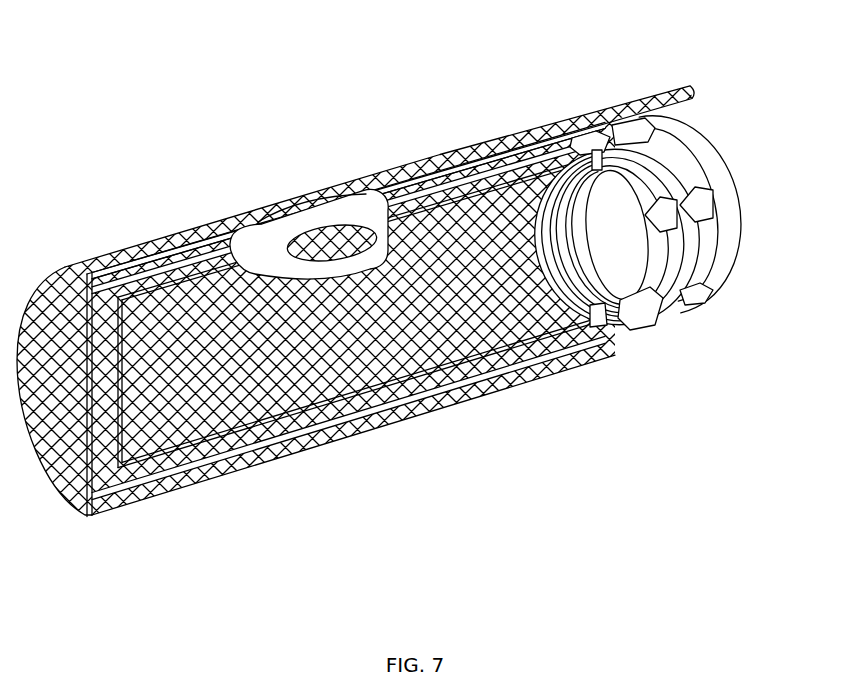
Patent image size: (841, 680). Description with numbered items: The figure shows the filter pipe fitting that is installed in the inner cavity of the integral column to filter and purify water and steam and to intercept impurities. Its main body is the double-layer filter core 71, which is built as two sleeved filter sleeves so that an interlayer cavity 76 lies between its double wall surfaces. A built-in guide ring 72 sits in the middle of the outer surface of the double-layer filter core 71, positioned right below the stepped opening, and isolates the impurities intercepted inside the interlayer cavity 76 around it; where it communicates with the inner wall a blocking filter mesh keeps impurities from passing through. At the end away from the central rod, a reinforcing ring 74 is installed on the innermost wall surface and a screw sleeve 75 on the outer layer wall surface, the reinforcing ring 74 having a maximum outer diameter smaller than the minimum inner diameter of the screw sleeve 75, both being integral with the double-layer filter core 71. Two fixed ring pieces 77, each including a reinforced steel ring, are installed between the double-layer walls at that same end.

The double-layer filter core 71 is at (92, 517).
The built-in guide ring 72 is at (262, 243).
The reinforcing ring 74 is at (612, 342).
The screw sleeve 75 is at (737, 260).
The interlayer cavity 76 is at (307, 452).
The fixed ring pieces 77 is at (587, 108).